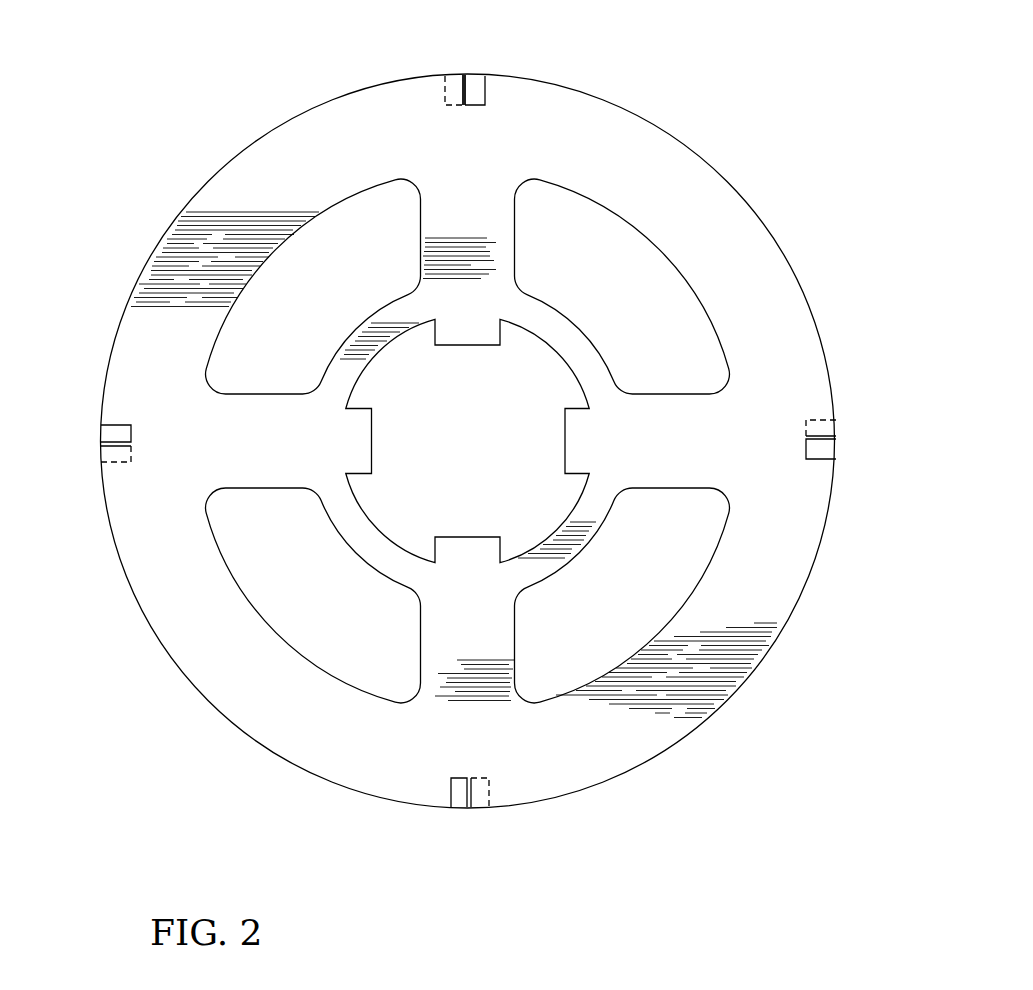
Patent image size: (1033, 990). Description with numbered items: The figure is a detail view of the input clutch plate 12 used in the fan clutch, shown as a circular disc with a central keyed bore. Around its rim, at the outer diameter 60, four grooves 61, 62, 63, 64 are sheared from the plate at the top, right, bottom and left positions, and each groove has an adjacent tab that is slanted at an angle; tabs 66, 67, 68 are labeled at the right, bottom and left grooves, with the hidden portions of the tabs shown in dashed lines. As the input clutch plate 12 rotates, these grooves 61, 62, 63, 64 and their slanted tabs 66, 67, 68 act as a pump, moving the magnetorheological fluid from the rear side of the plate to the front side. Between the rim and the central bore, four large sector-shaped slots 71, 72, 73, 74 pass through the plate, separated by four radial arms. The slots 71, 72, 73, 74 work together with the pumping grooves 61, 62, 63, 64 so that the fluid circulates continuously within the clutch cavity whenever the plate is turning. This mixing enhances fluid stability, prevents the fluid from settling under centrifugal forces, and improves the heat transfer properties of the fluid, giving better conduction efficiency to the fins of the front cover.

The input clutch plate 12 is at (665, 128).
The outer diameter 60 is at (730, 177).
The groove 61 is at (453, 85).
The groove 62 is at (823, 438).
The groove 63 is at (469, 800).
The groove 64 is at (464, 88).
The tab 66 is at (822, 428).
The tab 67 is at (487, 796).
The tab 68 is at (103, 454).
The slot 71 is at (668, 258).
The slot 72 is at (663, 628).
The slot 73 is at (283, 641).
The slot 74 is at (312, 218).